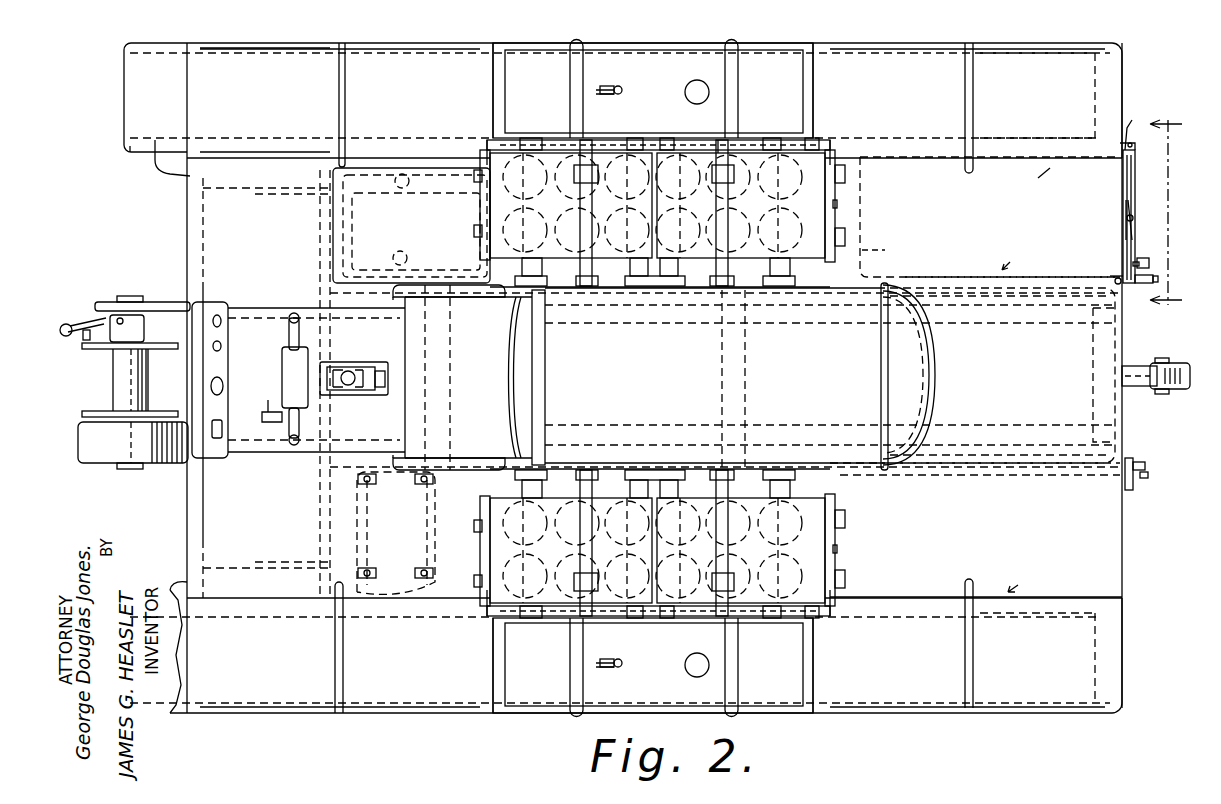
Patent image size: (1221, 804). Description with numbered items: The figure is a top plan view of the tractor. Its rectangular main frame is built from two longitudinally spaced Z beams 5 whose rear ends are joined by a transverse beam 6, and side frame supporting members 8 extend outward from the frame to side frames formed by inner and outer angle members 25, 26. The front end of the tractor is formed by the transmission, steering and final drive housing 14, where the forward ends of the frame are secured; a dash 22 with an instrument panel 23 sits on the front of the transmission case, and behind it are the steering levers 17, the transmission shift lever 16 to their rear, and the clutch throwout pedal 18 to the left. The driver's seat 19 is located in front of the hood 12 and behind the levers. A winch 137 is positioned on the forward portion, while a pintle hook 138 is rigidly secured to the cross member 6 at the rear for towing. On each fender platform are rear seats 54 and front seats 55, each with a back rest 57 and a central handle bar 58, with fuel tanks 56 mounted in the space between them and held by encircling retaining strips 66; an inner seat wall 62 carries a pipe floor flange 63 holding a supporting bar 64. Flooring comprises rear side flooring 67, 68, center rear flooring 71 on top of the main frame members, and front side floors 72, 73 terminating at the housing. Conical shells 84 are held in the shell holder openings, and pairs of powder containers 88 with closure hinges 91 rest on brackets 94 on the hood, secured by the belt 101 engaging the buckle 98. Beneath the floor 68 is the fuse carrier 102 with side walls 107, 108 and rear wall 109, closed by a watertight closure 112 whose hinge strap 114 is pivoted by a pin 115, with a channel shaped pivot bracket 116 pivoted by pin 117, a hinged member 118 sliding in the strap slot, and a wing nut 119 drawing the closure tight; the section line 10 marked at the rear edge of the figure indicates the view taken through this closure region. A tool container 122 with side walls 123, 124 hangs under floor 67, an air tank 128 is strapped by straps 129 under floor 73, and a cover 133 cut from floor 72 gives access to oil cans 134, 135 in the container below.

The Z beams 5 is at (805, 333).
The transverse beam 6 is at (1100, 378).
The side frame supporting members 8 is at (450, 398).
The section line 10 is at (1180, 211).
The hood 12 is at (515, 395).
The transmission, steering and final drive housing 14 is at (180, 160).
The transmission shift lever 16 is at (342, 366).
The steering levers 17 is at (300, 345).
The clutch throwout pedal 18 is at (259, 408).
The driver's seat 19 is at (405, 413).
The dash 22 is at (195, 398).
The instrument panel 23 is at (225, 372).
The inner side frame member 25 is at (150, 145).
The outer side frame angle member 26 is at (152, 57).
The rear seats 54 is at (989, 376).
The front seats 55 is at (311, 360).
The fuel tanks 56 is at (653, 378).
The back rest 57 is at (322, 38).
The central handle bar 58 is at (347, 112).
The inner seat wall 62 is at (815, 98).
The pipe floor flange 63 is at (495, 132).
The supporting bar 64 is at (750, 138).
The retaining strips 66 is at (578, 44).
The rear side flooring 67 is at (980, 522).
The rear side flooring 68 is at (990, 217).
The center rear flooring 71 is at (1002, 375).
The front side floor 72 is at (415, 226).
The front side floor 73 is at (396, 533).
The shells 84 is at (800, 262).
The powder containers 88 is at (838, 215).
The hinges 91 is at (490, 152).
The bracket 94 is at (793, 292).
The buckle 98 is at (713, 178).
The flexible belt 101 is at (718, 292).
The fuse carrier 102 is at (1025, 248).
The side wall 107 is at (938, 280).
The side wall 108 is at (1048, 163).
The rear wall 109 is at (895, 249).
The watertight closure 112 is at (1122, 272).
The hinge strap 114 is at (1123, 188).
The pin 115 is at (1143, 122).
The channel shaped pivot bracket 116 is at (1126, 228).
The pin 117 is at (1126, 218).
The hinged member 118 is at (1160, 278).
The wing nut 119 is at (1152, 258).
The tool container 122 is at (1018, 586).
The side wall 123 is at (888, 596).
The side wall 124 is at (1093, 470).
The air tank 128 is at (376, 498).
The straps 129 is at (383, 568).
The cover 133 is at (333, 241).
The oil can 134 is at (362, 198).
The oil can 135 is at (366, 263).
The winch 137 is at (113, 378).
The pintle hook 138 is at (1180, 390).